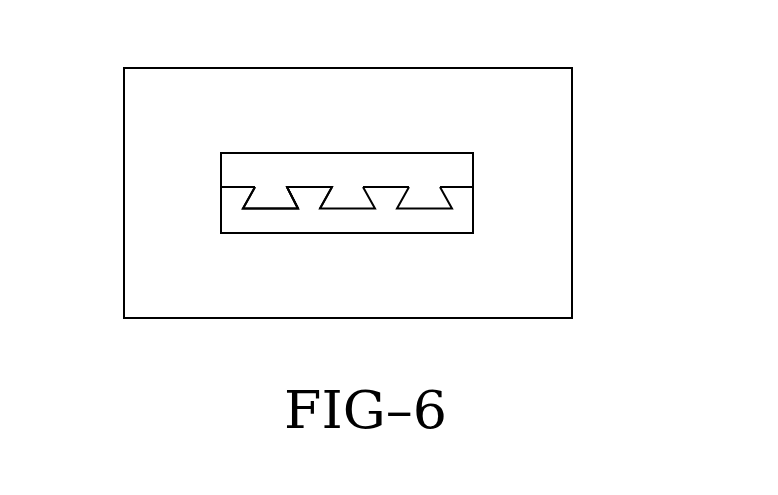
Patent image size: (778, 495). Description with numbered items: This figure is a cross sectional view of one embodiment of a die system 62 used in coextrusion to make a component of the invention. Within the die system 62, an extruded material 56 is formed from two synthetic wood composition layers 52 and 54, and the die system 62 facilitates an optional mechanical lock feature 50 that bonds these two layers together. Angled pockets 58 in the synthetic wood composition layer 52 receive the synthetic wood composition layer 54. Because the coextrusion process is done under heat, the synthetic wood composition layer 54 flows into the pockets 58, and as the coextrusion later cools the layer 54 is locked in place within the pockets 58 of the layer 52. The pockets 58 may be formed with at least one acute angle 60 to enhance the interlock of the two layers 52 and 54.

The mechanical lock feature 50 is at (387, 185).
The synthetic wood composition layer 52 is at (463, 222).
The synthetic wood composition layer 54 is at (463, 165).
The extruded material 56 is at (220, 220).
The angled pockets 58 is at (280, 208).
The acute angle 60 is at (325, 200).
The die system 62 is at (572, 205).